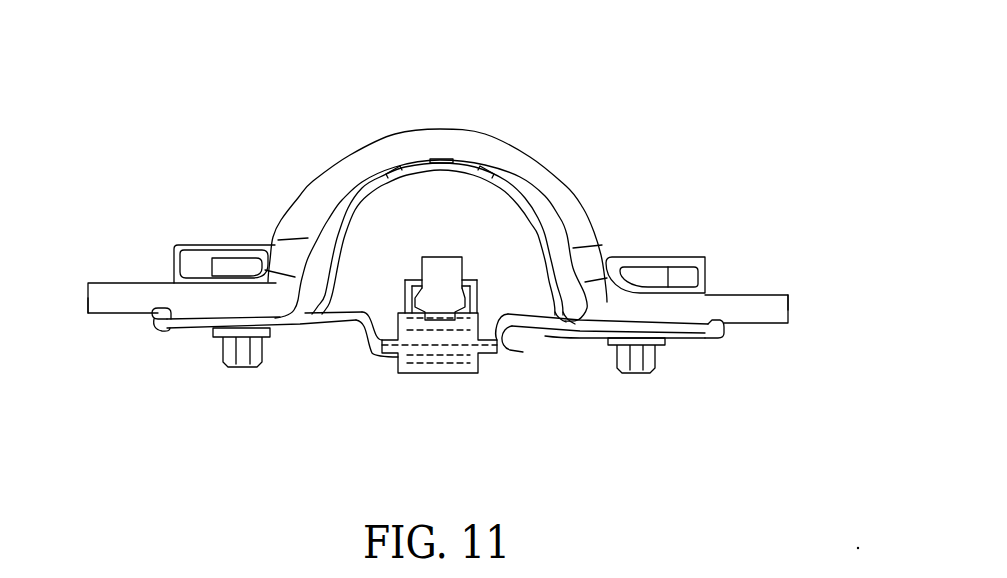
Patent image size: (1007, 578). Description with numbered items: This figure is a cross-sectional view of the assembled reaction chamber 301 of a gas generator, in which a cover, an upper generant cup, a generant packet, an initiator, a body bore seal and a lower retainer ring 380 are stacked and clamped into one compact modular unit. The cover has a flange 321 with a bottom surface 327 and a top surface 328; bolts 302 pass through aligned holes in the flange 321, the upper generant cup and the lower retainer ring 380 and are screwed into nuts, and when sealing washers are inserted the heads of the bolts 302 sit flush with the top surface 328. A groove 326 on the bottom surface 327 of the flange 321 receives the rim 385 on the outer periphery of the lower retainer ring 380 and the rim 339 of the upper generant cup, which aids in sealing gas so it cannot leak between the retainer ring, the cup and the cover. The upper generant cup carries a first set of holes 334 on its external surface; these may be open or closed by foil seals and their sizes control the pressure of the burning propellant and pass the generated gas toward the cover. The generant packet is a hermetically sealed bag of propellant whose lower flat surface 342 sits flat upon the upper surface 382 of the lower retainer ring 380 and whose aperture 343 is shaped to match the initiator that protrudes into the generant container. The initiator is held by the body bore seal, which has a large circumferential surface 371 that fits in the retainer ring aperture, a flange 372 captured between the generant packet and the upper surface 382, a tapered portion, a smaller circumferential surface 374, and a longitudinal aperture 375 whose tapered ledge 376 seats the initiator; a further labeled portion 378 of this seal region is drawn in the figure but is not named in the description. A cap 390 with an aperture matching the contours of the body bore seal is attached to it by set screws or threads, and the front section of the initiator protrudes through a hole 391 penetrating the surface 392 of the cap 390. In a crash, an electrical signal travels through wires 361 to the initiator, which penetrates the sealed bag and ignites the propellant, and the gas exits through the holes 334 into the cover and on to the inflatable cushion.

The reaction chamber 301 is at (677, 146).
The bolts 302 is at (655, 277).
The flange 321 is at (784, 313).
The groove 326 is at (157, 310).
The bottom surface 327 is at (97, 333).
The top surface 328 is at (777, 293).
The holes 334 is at (500, 188).
The rim 339 is at (170, 302).
The lower flat surface 342 is at (347, 315).
The aperture 343 is at (487, 262).
The wires 361 is at (443, 233).
The large circumferential surface 371 is at (492, 375).
The flange 372 is at (497, 346).
The smaller circumferential surface 374 is at (409, 281).
The aperture 375 is at (433, 373).
The tapered ledge 376 is at (432, 375).
The saddle left leg 378 is at (404, 311).
The lower retainer ring 380 is at (687, 335).
The upper surface 382 is at (670, 330).
The rim 385 is at (165, 326).
The cap 390 is at (478, 295).
The hole 391 is at (420, 250).
The surface 392 is at (468, 277).